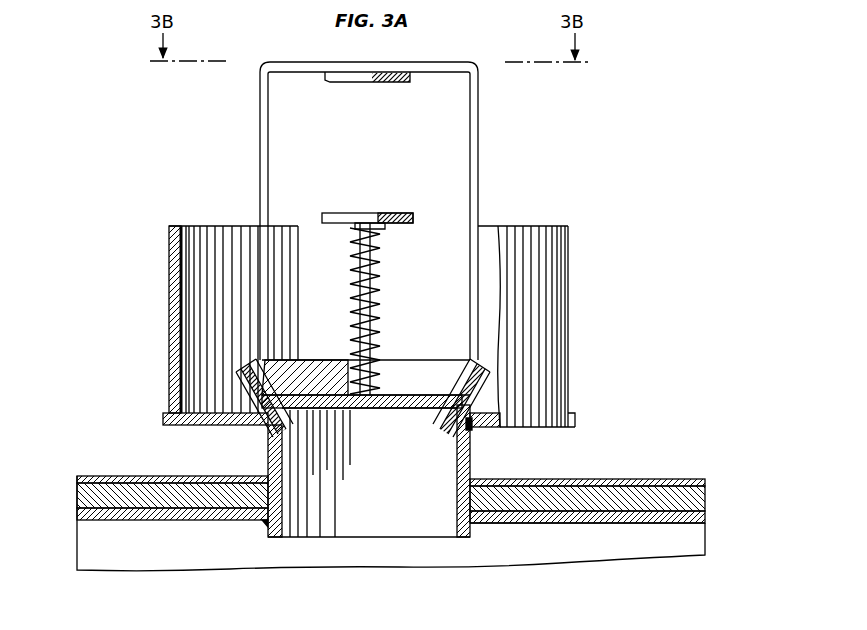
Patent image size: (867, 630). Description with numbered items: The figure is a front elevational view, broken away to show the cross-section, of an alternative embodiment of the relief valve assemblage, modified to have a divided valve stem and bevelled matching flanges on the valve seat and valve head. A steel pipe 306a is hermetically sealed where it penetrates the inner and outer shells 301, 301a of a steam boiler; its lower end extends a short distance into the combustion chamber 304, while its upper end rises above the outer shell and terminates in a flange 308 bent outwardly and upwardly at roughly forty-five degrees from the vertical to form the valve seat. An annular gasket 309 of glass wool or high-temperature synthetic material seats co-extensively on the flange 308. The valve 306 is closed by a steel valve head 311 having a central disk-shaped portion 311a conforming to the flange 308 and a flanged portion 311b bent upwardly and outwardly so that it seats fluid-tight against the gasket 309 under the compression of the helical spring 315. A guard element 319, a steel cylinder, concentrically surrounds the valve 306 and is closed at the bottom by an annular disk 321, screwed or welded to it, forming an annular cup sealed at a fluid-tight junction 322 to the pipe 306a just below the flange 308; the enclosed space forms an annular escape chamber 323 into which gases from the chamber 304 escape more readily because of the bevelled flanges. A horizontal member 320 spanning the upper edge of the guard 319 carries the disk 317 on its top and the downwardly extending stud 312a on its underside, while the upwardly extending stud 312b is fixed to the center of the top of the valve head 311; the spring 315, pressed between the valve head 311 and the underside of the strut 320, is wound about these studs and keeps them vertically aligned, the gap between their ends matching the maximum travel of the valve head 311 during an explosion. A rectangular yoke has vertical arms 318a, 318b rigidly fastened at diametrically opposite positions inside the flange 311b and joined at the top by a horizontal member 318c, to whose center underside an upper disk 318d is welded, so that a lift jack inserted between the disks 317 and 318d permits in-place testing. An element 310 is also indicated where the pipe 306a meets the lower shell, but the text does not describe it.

The inner shell 301 is at (592, 479).
The outer shell 301a is at (615, 522).
The combustion chamber 304 is at (531, 563).
The valve 306 is at (494, 204).
The pipe 306a is at (277, 455).
The flange 308 is at (509, 419).
The annular gasket 309 is at (488, 372).
The joint 310 is at (266, 526).
The valve head 311 is at (411, 352).
The central disk-shaped portion 311a is at (400, 396).
The flanged portion 311b is at (254, 365).
The downwardly extended valve stem stud 312a is at (360, 262).
The upwardly extended valve stem stud 312b is at (355, 360).
The helical spring 315 is at (384, 270).
The disk 317 is at (380, 218).
The vertical arm 318a is at (260, 106).
The vertical arm 318b is at (478, 108).
The horizontal member 318c is at (409, 62).
The upper disk 318d is at (398, 82).
The guard element 319 is at (568, 246).
The horizontal member 320 is at (385, 228).
The annular disk 321 is at (210, 425).
The fluid-tight junction 322 is at (472, 428).
The annular escape chamber 323 is at (215, 232).